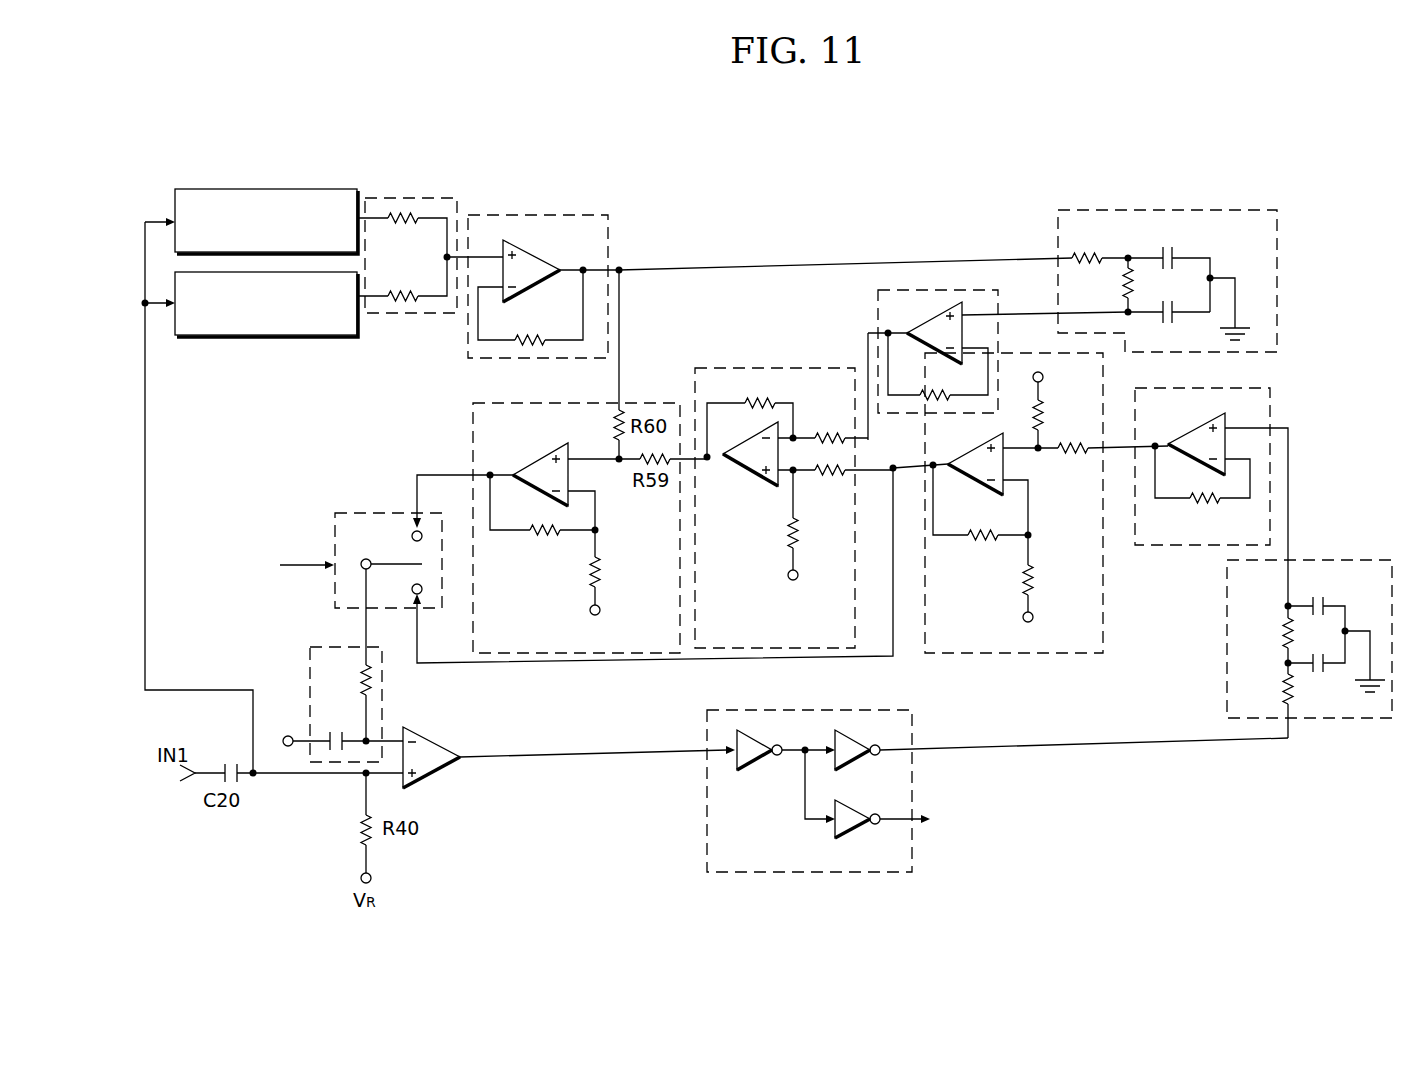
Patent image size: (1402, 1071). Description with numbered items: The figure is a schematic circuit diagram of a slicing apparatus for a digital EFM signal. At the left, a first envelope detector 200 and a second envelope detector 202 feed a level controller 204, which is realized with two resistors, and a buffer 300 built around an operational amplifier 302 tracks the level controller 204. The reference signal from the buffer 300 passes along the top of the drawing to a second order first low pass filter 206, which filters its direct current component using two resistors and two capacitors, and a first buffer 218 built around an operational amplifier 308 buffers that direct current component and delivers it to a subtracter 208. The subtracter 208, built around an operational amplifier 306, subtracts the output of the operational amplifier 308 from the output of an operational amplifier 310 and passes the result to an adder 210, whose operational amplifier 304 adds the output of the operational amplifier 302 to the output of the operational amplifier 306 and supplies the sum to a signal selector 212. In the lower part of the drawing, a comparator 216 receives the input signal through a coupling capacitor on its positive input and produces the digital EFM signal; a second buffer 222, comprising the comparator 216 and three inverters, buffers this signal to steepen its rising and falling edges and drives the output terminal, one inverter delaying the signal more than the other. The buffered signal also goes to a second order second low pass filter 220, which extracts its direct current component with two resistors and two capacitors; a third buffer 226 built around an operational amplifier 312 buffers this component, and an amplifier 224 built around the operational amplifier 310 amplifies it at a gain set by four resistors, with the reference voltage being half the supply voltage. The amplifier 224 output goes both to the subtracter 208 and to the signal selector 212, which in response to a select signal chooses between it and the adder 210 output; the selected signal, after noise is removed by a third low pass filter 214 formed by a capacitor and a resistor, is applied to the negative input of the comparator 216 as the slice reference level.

The first envelope detector 200 is at (307, 189).
The second envelope detector 202 is at (314, 340).
The level controller 204 is at (428, 198).
The first low pass filter 206 is at (1190, 210).
The subtracter 208 is at (794, 479).
The adder 210 is at (578, 497).
The signal selector 212 is at (372, 512).
The third low pass filter 214 is at (382, 695).
The comparator 216 is at (435, 748).
The first buffer 218 is at (933, 315).
The second low pass filter 220 is at (1345, 560).
The second buffer 222 is at (912, 722).
The amplifier 224 is at (1039, 503).
The third buffer 226 is at (1202, 493).
The buffer 300 is at (538, 257).
The operational amplifier 302 is at (532, 254).
The operational amplifier 304 is at (545, 456).
The operational amplifier 306 is at (752, 476).
The operational amplifier 308 is at (935, 315).
The operational amplifier 310 is at (975, 477).
The operational amplifier 312 is at (1195, 430).